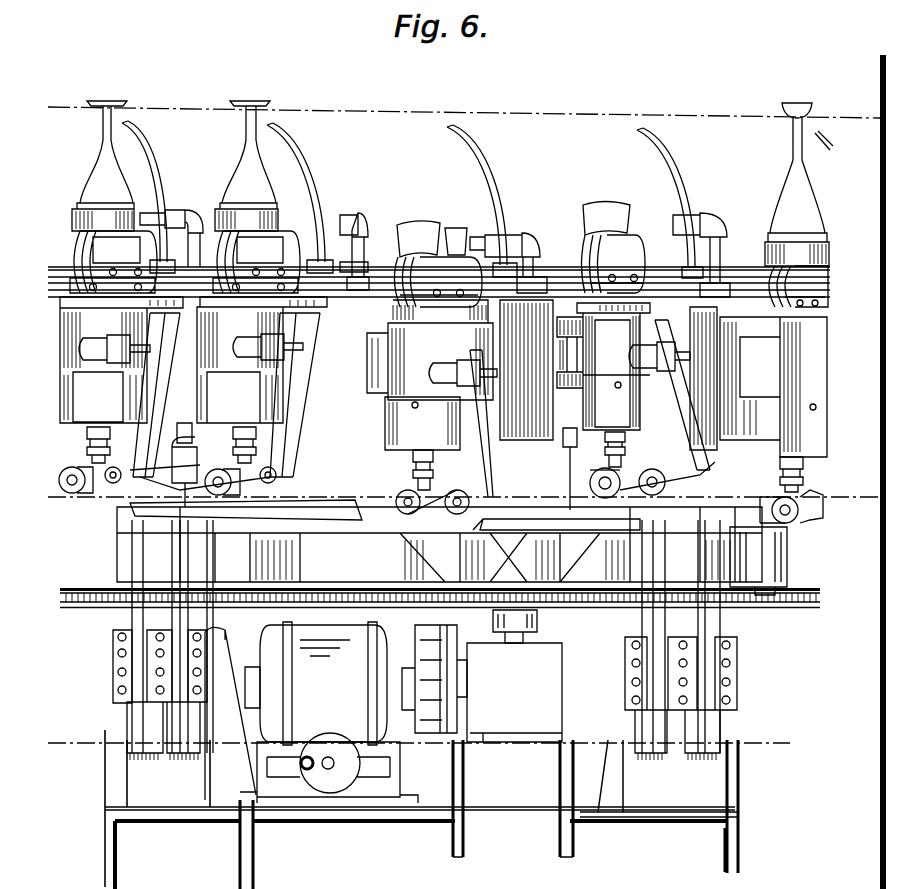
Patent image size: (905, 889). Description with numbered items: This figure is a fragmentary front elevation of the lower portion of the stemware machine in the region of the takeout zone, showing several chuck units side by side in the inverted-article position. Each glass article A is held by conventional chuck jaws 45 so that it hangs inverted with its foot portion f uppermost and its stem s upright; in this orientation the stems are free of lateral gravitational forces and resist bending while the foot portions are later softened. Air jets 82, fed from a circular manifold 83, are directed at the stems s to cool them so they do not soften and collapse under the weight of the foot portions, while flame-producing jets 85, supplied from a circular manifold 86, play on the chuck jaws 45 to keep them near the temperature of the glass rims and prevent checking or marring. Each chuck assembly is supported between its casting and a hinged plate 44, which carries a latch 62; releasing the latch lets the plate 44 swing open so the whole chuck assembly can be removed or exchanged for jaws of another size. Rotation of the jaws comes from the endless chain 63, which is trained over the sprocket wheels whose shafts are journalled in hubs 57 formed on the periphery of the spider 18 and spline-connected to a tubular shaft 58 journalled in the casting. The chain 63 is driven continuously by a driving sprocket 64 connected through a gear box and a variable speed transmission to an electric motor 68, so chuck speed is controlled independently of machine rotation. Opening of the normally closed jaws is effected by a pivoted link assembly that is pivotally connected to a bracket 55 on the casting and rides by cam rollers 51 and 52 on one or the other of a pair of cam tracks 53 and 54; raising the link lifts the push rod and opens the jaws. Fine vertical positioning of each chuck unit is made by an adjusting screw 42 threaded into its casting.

The bottle A is at (243, 163).
The foot portion f is at (228, 103).
The stem s is at (250, 122).
The air jets 82 is at (302, 172).
The flame-producing jets 85 is at (183, 210).
The circular manifold 86 is at (377, 263).
The chuck jaws 45 is at (415, 223).
The circular manifold 83 is at (737, 270).
The latch 62 is at (107, 336).
The hinged plate 44 is at (430, 350).
The tubular shaft 58 is at (440, 447).
The cam roller 51 is at (73, 467).
The cam roller 52 is at (417, 482).
The cam track 53 is at (330, 492).
The cam track 54 is at (473, 523).
The bracket 55 is at (300, 438).
The adjusting screw 42 is at (717, 490).
The hub 57 is at (777, 567).
The spider 18 is at (330, 550).
The endless chain 63 is at (220, 603).
The driving sprocket 64 is at (540, 620).
The electric motor 68 is at (387, 723).